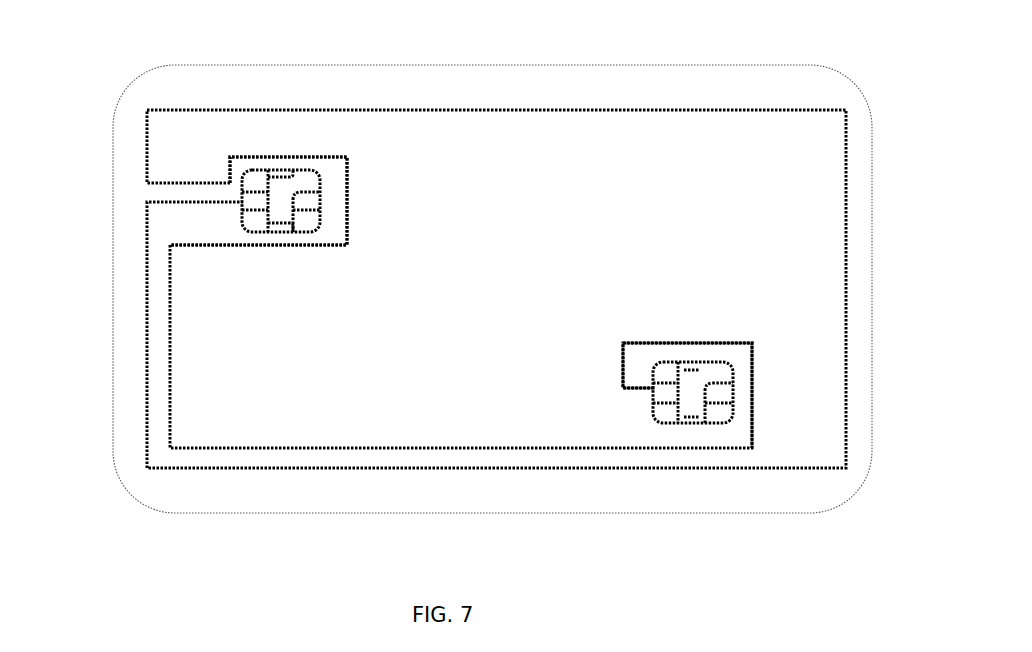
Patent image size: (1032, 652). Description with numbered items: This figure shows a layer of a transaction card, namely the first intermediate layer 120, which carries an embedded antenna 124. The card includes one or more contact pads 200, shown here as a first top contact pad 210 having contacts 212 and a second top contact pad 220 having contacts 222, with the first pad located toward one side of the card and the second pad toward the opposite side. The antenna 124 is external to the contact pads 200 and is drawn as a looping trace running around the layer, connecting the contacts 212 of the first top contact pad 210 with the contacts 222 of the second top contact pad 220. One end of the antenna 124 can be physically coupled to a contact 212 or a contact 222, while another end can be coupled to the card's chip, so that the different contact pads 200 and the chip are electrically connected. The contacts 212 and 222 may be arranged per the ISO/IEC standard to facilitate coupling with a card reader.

The first intermediate layer 120 is at (110, 178).
The antenna 124 is at (243, 110).
The contact pad 200 is at (488, 292).
The first top contact pad 210 is at (277, 210).
The contacts 212 is at (320, 240).
The second top contact pad 220 is at (724, 376).
The contacts 222 is at (679, 362).